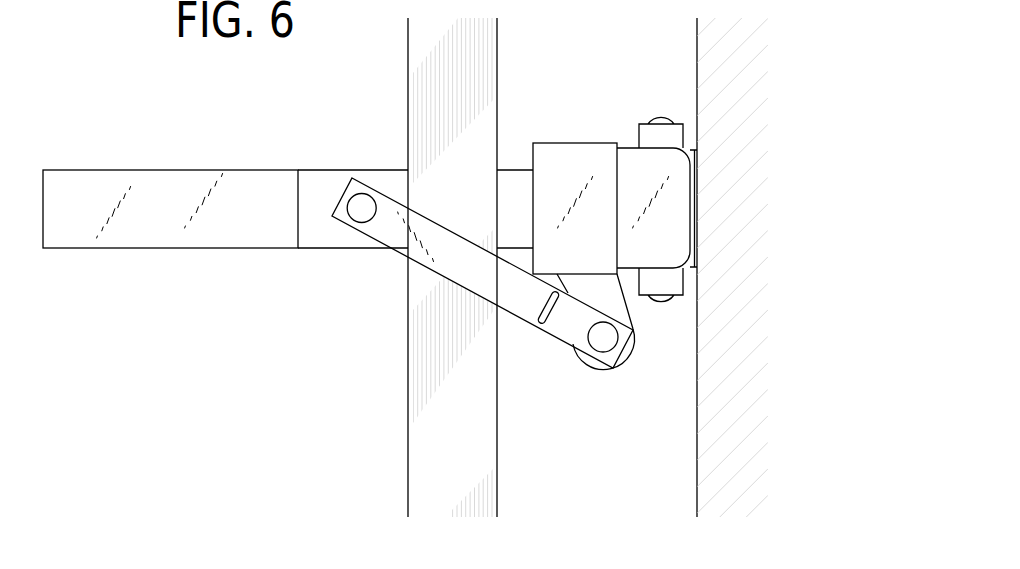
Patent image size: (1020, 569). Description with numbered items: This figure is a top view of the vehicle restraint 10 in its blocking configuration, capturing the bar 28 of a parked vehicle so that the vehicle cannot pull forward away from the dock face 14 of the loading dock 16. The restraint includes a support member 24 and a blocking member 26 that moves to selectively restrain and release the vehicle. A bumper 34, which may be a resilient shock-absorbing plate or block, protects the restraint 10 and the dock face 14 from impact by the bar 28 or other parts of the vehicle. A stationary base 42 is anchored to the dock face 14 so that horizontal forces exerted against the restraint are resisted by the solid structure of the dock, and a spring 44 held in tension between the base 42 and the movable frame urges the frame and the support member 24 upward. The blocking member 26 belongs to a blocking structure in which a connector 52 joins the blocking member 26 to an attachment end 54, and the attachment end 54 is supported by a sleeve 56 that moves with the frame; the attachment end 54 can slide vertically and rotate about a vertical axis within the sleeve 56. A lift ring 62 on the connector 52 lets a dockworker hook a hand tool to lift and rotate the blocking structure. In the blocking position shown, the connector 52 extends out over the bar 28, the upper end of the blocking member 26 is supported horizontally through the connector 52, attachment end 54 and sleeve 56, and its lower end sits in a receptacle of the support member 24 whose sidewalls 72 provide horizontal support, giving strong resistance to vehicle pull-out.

The vehicle restraint 10 is at (205, 383).
The dock face 14 is at (697, 420).
The loading dock 16 is at (605, 67).
The support member 24 is at (155, 247).
The blocking member 26 is at (340, 218).
The bar 28 is at (408, 405).
The bumper 34 is at (532, 197).
The base 42 is at (692, 267).
The spring 44 is at (661, 117).
The connector 52 is at (400, 250).
The attachment end 54 is at (603, 337).
The sleeve 56 is at (578, 355).
The lift ring 62 is at (542, 298).
The sidewalls 72 is at (668, 207).